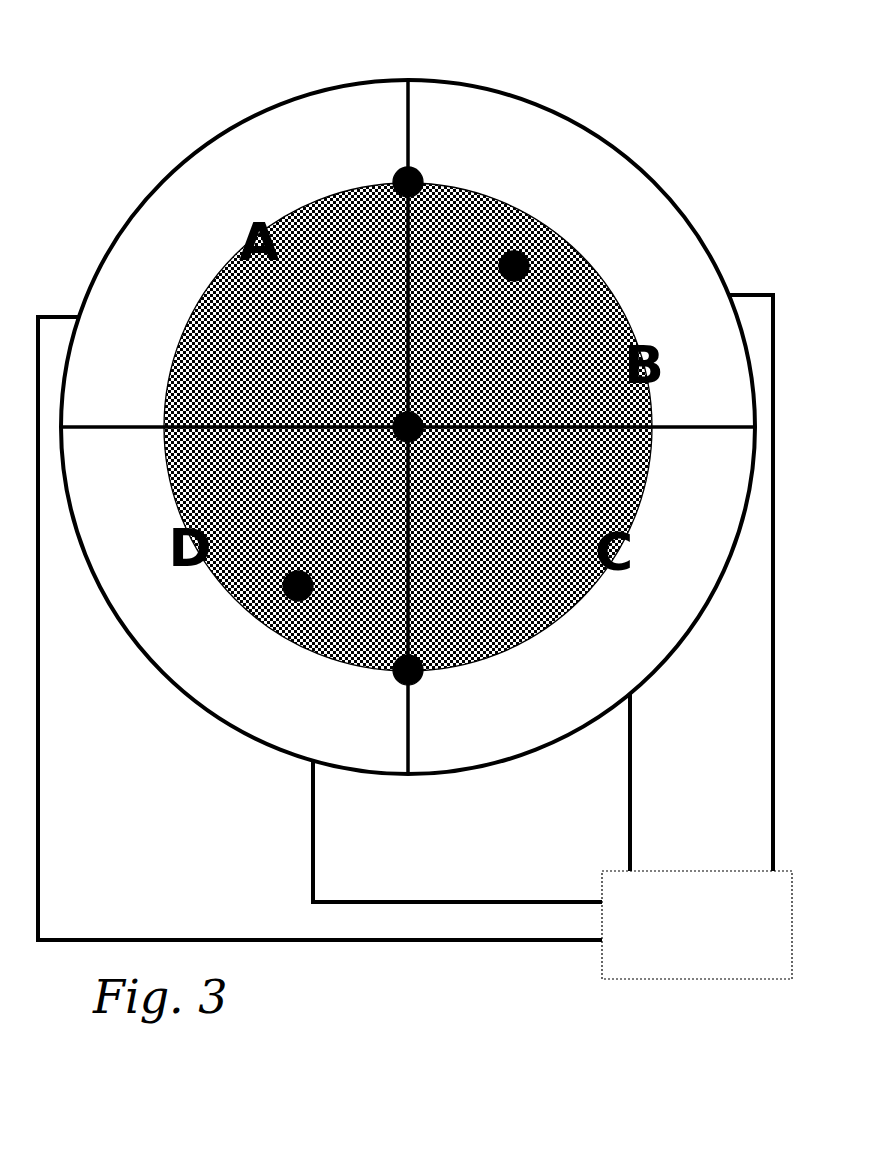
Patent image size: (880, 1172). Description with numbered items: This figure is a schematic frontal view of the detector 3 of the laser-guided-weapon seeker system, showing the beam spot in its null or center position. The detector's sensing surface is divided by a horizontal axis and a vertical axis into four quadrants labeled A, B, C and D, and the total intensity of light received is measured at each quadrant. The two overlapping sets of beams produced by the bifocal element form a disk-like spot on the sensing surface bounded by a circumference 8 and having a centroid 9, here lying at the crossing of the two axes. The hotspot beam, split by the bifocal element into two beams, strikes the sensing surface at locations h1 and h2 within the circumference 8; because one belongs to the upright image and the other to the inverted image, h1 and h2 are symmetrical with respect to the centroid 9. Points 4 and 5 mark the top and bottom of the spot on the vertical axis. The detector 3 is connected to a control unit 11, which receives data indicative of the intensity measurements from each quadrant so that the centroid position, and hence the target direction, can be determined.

The detector 3 is at (214, 46).
The upper position sensor 4 is at (420, 176).
The lower position sensor 5 is at (395, 680).
The circumference 8 is at (623, 308).
The centroid 9 is at (408, 427).
The location of first beam H1 h1 is at (530, 264).
The location of second beam H2 h2 is at (290, 587).
The control unit 11 is at (697, 925).